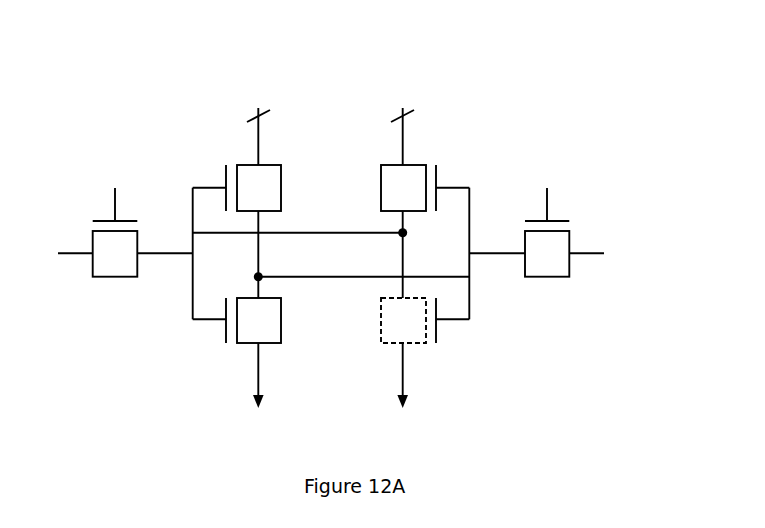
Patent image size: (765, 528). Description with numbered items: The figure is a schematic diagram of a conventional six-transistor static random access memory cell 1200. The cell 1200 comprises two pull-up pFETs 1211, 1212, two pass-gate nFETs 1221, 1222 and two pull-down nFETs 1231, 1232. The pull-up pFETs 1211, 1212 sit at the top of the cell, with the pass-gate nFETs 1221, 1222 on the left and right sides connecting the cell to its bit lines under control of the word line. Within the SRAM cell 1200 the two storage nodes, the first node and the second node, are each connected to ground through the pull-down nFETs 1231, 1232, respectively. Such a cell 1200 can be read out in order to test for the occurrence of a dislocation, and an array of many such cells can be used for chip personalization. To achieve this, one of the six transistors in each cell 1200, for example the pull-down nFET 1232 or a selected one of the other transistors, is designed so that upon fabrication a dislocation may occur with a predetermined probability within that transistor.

The static random access memory (SRAM) cell 1200 is at (138, 93).
The pull-up pFET 1211 is at (283, 187).
The pull-up pFET 1212 is at (380, 187).
The pass-gate nFET 1221 is at (115, 278).
The pass-gate nFET 1222 is at (547, 278).
The pull-down nFET 1231 is at (240, 345).
The pull-down nFET 1232 is at (383, 345).